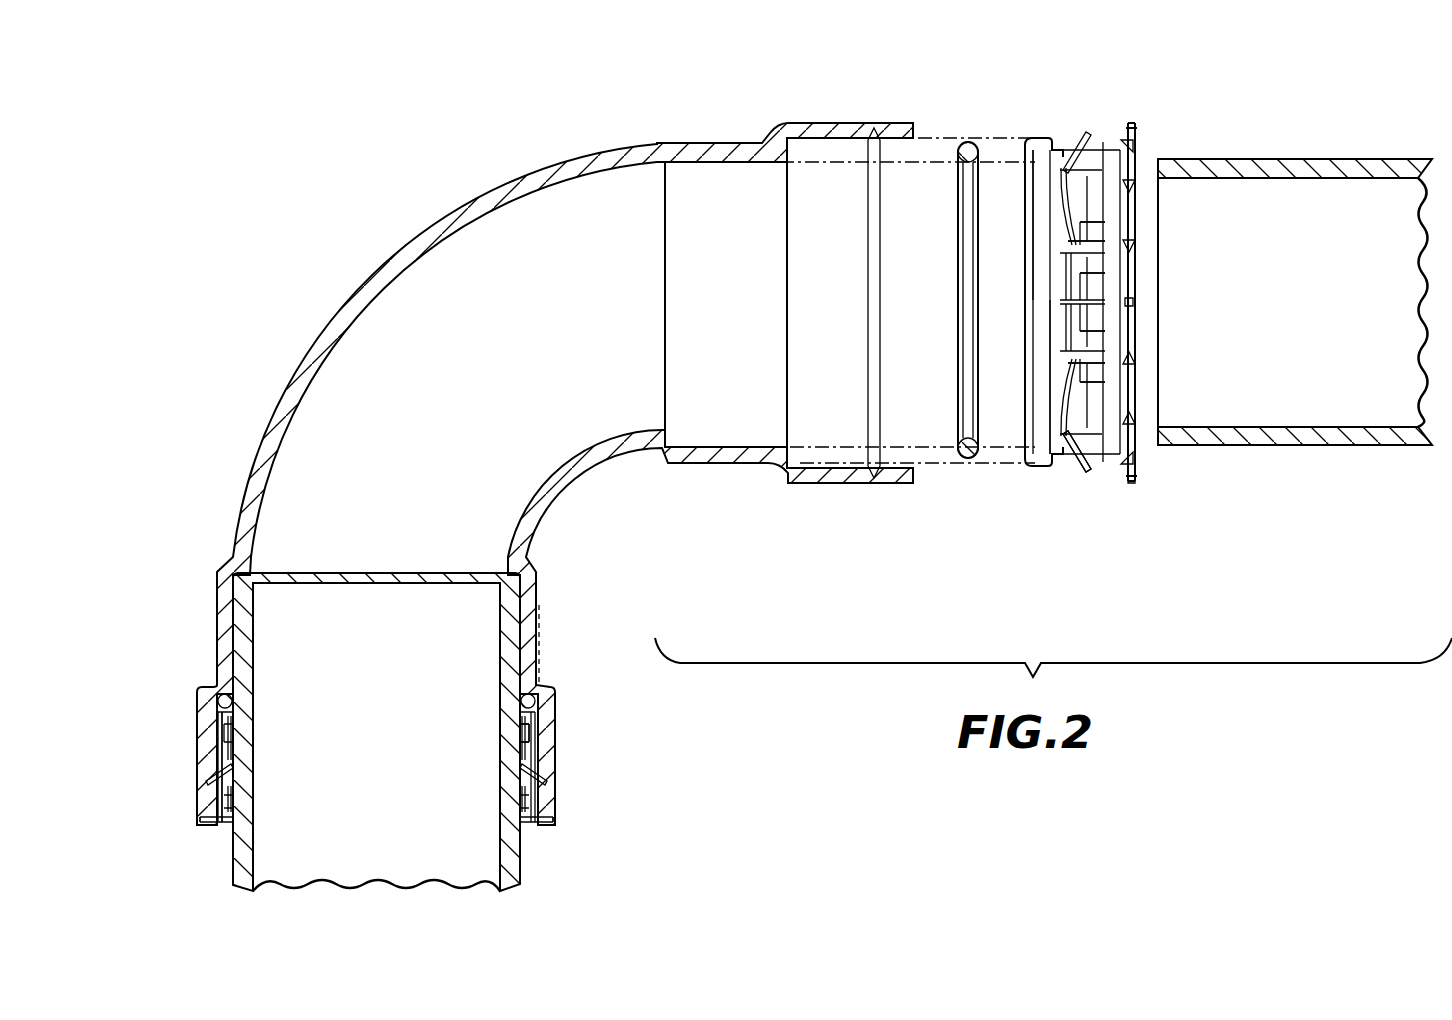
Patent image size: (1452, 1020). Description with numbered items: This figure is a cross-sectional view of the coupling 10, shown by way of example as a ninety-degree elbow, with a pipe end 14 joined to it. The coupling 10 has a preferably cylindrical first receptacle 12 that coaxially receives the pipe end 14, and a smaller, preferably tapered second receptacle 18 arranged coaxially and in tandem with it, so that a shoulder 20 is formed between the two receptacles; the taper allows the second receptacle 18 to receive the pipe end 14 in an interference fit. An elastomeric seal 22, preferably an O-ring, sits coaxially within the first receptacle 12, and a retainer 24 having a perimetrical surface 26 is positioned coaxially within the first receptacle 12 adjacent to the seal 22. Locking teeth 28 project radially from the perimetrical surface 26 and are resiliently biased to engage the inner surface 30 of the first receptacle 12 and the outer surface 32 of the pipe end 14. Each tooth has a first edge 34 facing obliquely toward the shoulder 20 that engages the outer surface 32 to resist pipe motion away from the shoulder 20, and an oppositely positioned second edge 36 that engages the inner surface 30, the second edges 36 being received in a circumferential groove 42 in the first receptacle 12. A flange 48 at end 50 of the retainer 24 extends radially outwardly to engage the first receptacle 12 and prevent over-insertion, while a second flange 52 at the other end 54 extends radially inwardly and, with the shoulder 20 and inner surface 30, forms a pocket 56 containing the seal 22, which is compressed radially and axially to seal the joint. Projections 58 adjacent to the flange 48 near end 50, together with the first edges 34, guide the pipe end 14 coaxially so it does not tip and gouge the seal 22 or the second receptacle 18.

The coupling 10 is at (440, 207).
The first receptacle 12 is at (845, 123).
The pipe end 14 is at (1267, 447).
The second receptacle 18 is at (720, 143).
The shoulder 20 is at (793, 447).
The elastomeric seal 22 is at (968, 144).
The retainer 24 is at (1040, 470).
The perimetrical surface 26 is at (1080, 140).
The locking teeth 28 is at (1083, 402).
The inner surface 30 is at (903, 455).
The outer surface 32 is at (1197, 447).
The first edge 34 is at (231, 763).
The second edge 36 is at (202, 788).
The circumferential groove 42 is at (878, 132).
The flange 48 is at (1131, 484).
The end 50 is at (1136, 126).
The second flange 52 is at (1033, 445).
The other end 54 is at (1024, 316).
The pocket 56 is at (524, 699).
The projections 58 is at (1136, 252).